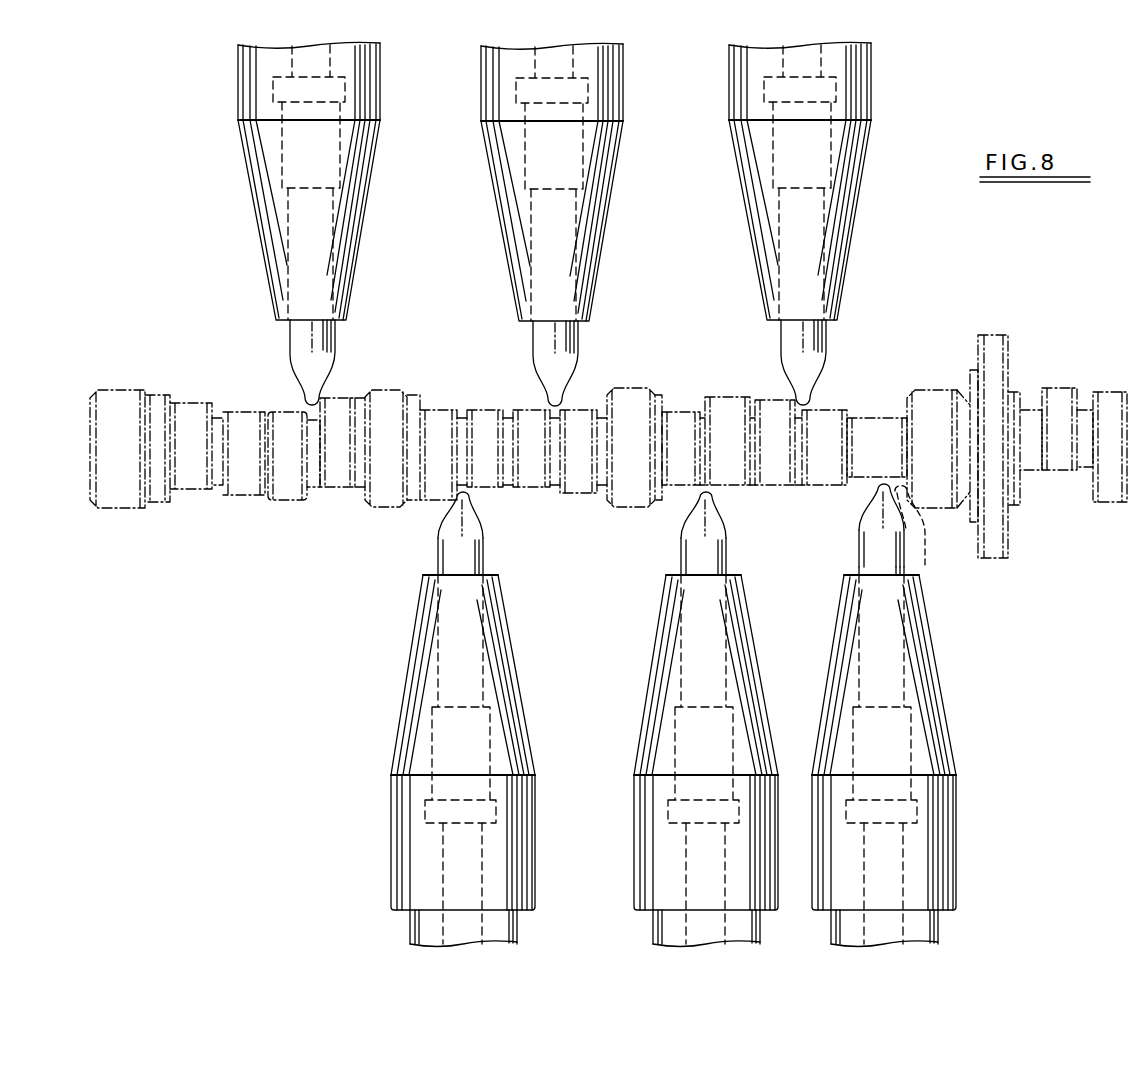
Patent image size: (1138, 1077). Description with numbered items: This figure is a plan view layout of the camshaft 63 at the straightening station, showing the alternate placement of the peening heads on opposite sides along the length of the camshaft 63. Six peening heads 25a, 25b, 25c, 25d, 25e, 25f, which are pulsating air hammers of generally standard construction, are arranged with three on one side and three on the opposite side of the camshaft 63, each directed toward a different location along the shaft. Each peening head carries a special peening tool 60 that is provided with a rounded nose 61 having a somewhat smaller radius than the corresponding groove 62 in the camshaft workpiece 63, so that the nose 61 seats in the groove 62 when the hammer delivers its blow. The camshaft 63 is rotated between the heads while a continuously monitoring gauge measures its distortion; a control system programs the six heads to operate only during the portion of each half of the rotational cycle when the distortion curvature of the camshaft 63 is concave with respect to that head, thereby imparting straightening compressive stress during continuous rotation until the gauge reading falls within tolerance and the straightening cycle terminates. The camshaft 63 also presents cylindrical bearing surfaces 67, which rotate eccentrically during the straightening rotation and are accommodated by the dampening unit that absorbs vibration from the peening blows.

The peening head 25a is at (352, 243).
The peening head 25b is at (600, 253).
The peening head 25c is at (848, 250).
The peening head 25d is at (488, 742).
The peening head 25e is at (740, 646).
The peening head 25f is at (926, 652).
The peening tool 60 is at (470, 556).
The rounded nose 61 is at (466, 493).
The groove 62 is at (463, 410).
The camshaft 63 is at (608, 458).
The cylindrical bearing surface 67 is at (388, 508).